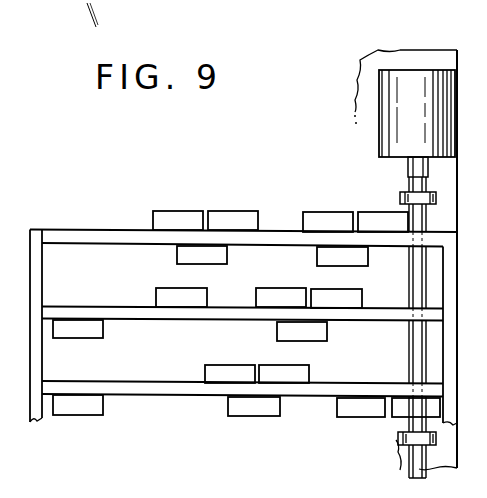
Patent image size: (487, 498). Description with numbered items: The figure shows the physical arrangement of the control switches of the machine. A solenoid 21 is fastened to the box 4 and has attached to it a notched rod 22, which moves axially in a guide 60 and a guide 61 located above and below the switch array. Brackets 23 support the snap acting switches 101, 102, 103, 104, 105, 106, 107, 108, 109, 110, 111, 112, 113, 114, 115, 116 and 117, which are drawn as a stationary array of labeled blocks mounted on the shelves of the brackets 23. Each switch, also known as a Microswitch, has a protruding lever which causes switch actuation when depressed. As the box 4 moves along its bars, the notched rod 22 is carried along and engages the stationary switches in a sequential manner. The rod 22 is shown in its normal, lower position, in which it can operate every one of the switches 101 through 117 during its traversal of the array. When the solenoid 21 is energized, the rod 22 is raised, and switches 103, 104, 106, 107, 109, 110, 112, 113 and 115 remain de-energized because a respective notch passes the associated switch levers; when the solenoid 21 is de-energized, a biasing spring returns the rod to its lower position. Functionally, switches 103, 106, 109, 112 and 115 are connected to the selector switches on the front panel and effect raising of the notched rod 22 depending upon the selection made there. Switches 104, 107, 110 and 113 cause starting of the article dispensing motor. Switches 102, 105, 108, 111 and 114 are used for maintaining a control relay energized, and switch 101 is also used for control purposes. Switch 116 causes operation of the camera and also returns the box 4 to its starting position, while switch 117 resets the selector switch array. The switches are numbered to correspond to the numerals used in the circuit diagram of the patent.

The box 4 is at (418, 50).
The solenoid 21 is at (399, 120).
The notched rod 22 is at (409, 345).
The brackets 23 is at (35, 229).
The guide 60 is at (400, 197).
The guide 61 is at (398, 438).
The snap acting switch 101 is at (416, 407).
The snap acting switch 102 is at (361, 407).
The snap acting switch 103 is at (383, 222).
The snap acting switch 104 is at (328, 222).
The snap acting switch 105 is at (342, 256).
The snap acting switch 106 is at (336, 298).
The snap acting switch 107 is at (281, 297).
The snap acting switch 108 is at (302, 331).
The snap acting switch 109 is at (284, 374).
The snap acting switch 110 is at (230, 374).
The snap acting switch 111 is at (254, 406).
The snap acting switch 112 is at (233, 220).
The snap acting switch 113 is at (178, 220).
The snap acting switch 114 is at (202, 255).
The snap acting switch 115 is at (181, 297).
The snap acting switch 116 is at (78, 329).
The snap acting switch 117 is at (78, 405).